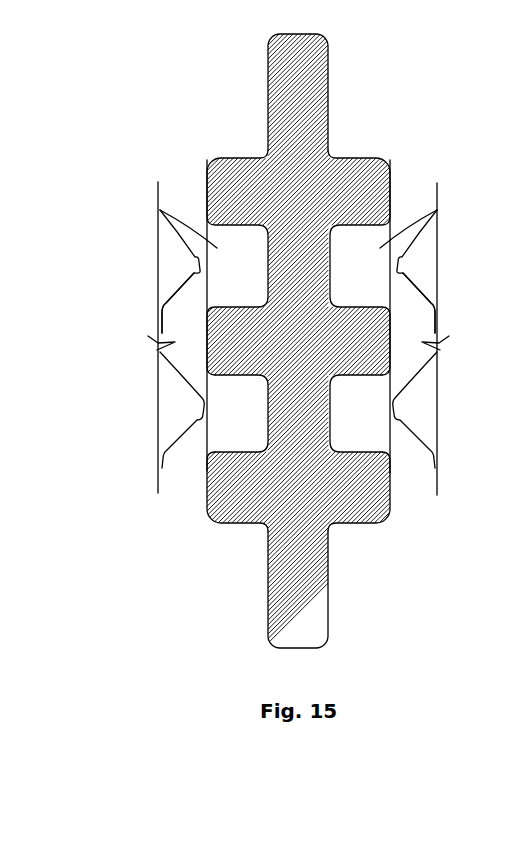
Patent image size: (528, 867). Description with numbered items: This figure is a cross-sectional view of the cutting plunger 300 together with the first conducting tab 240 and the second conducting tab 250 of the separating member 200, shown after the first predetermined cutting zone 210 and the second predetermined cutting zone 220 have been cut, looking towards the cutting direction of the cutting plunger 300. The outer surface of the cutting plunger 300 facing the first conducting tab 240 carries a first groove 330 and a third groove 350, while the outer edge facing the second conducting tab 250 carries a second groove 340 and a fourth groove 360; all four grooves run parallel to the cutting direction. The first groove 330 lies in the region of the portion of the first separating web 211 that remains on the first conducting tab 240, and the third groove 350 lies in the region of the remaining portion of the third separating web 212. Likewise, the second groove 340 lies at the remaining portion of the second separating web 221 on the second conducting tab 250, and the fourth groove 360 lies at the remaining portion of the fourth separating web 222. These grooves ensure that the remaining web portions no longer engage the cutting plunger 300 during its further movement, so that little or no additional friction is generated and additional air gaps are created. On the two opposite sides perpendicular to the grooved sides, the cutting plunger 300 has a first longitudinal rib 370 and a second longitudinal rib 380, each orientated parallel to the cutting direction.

The cutting plunger 300 is at (372, 160).
The second longitudinal rib 380 is at (328, 82).
The first longitudinal rib 370 is at (328, 608).
The first groove 330 is at (227, 435).
The second groove 340 is at (372, 436).
The third groove 350 is at (163, 212).
The fourth groove 360 is at (437, 212).
The first predetermined cutting zone 210 is at (185, 207).
The second predetermined cutting zone 220 is at (400, 207).
The separating member 200 is at (113, 337).
The first conducting tab 240 is at (167, 248).
The second conducting tab 250 is at (427, 255).
The third separating web 212 is at (182, 288).
The fourth separating web 222 is at (423, 289).
The first separating web 211 is at (173, 377).
The second separating web 221 is at (420, 384).